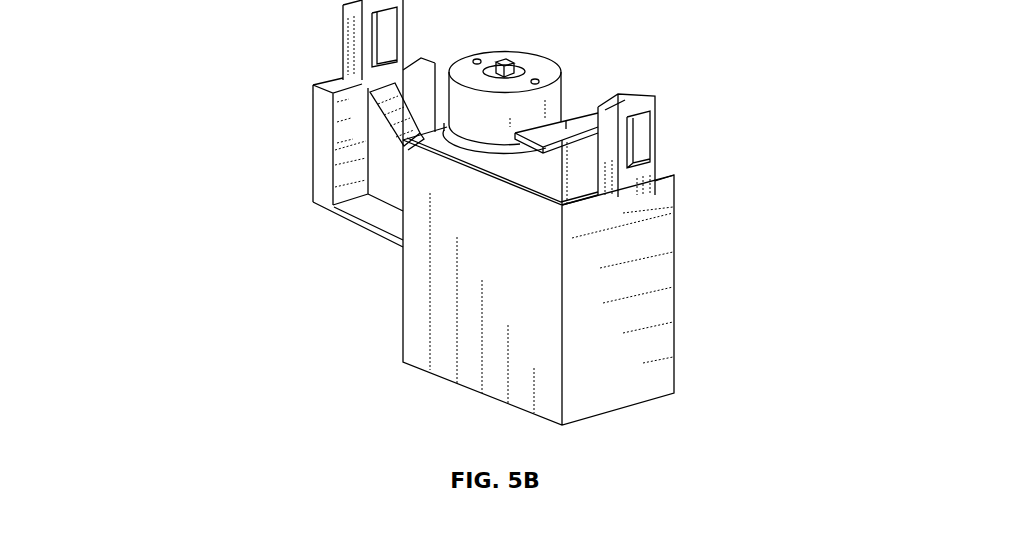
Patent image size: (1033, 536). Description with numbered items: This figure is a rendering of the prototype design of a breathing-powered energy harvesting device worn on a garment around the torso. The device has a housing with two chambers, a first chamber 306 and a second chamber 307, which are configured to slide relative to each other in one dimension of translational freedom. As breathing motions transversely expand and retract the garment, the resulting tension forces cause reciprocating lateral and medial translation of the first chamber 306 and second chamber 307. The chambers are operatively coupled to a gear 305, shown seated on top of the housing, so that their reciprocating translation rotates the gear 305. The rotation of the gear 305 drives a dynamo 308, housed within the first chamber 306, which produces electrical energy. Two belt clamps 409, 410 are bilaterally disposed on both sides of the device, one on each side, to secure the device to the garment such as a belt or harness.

The gear 305 is at (555, 88).
The first chamber 306 is at (619, 378).
The second chamber 307 is at (343, 42).
The dynamo 308 is at (549, 172).
The belt clamp 409 is at (648, 177).
The belt clamp 410 is at (311, 211).